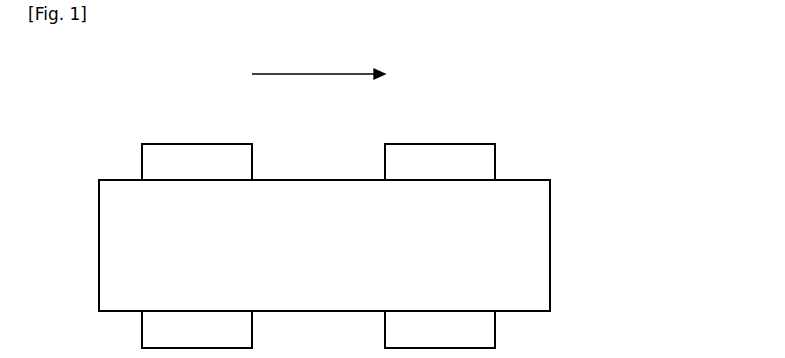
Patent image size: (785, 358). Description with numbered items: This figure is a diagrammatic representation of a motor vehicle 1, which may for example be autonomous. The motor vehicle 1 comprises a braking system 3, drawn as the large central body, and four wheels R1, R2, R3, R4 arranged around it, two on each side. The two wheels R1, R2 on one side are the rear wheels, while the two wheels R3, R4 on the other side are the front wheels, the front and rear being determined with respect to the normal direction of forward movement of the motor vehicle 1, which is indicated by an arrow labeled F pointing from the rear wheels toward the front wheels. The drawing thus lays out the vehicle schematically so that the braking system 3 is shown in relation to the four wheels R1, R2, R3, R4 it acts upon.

The motor vehicle 1 is at (614, 152).
The braking system 3 is at (324, 245).
The rear wheel R1 is at (197, 162).
The rear wheel R2 is at (197, 329).
The front wheel R3 is at (440, 162).
The front wheel R4 is at (440, 329).